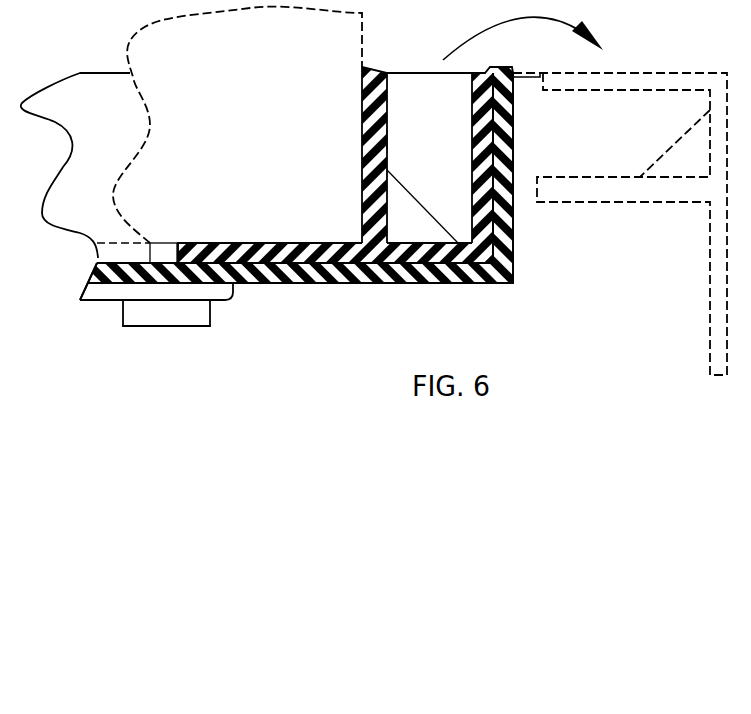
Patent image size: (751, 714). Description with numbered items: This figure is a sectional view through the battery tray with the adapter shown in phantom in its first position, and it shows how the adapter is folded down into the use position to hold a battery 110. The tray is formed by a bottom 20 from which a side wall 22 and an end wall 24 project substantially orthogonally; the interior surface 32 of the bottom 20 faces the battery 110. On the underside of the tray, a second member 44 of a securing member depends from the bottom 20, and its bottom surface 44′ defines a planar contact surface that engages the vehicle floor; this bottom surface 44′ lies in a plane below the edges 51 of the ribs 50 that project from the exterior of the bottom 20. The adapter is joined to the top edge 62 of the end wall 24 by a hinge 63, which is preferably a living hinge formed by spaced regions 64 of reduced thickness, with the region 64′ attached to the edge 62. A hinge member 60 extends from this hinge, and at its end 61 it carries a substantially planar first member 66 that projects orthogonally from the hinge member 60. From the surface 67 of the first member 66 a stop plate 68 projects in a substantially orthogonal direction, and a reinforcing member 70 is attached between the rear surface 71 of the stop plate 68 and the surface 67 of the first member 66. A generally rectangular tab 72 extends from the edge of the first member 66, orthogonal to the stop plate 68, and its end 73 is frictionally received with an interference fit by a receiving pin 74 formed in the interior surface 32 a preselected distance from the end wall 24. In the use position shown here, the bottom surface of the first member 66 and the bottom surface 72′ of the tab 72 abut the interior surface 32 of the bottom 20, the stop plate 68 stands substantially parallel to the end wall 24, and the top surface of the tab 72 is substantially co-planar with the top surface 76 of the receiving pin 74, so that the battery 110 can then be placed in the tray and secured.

The bottom 20 is at (418, 285).
The side wall 22 is at (98, 92).
The end wall 24 is at (513, 228).
The interior surface 32 is at (110, 264).
The second member 44 is at (135, 315).
The bottom surface 44′ is at (163, 327).
The rib 50 is at (237, 287).
The edge 51 is at (216, 302).
The hinge member 60 is at (472, 117).
The end 61 is at (476, 240).
The top edge 62 is at (513, 80).
The hinge 63 is at (551, 105).
The region of reduced thickness 64 is at (543, 72).
The region 64′ is at (513, 72).
The first member 66 is at (392, 262).
The surface 67 is at (425, 242).
The stop plate 68 is at (378, 80).
The reinforcing member 70 is at (401, 203).
The rear surface 71 is at (387, 140).
The tab 72 is at (220, 243).
The bottom surface 72′ is at (305, 285).
The end 73 is at (175, 248).
The receiving pin 74 is at (137, 243).
The top surface 76 is at (162, 253).
The battery 110 is at (254, 118).